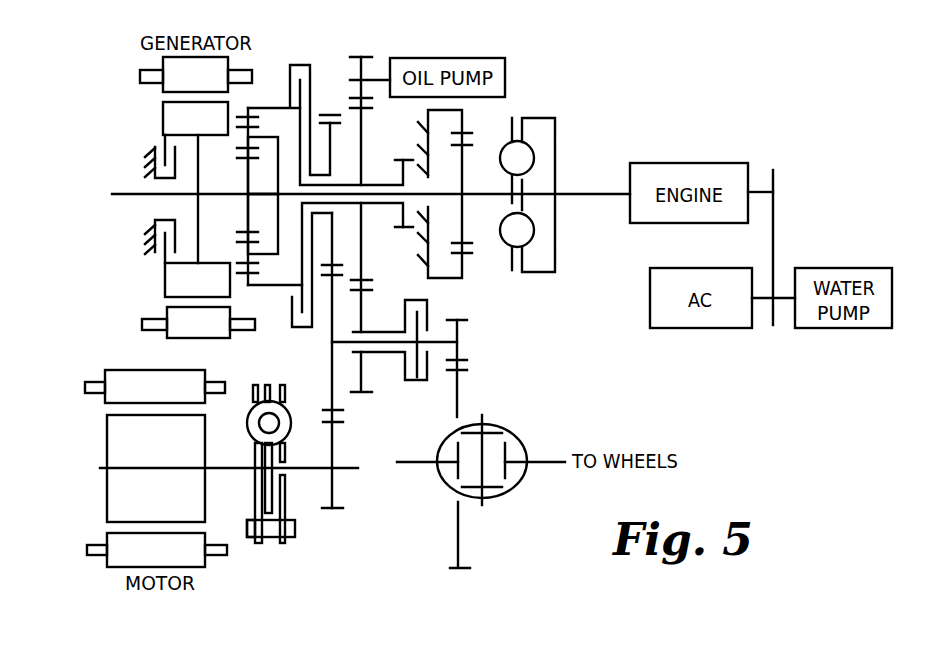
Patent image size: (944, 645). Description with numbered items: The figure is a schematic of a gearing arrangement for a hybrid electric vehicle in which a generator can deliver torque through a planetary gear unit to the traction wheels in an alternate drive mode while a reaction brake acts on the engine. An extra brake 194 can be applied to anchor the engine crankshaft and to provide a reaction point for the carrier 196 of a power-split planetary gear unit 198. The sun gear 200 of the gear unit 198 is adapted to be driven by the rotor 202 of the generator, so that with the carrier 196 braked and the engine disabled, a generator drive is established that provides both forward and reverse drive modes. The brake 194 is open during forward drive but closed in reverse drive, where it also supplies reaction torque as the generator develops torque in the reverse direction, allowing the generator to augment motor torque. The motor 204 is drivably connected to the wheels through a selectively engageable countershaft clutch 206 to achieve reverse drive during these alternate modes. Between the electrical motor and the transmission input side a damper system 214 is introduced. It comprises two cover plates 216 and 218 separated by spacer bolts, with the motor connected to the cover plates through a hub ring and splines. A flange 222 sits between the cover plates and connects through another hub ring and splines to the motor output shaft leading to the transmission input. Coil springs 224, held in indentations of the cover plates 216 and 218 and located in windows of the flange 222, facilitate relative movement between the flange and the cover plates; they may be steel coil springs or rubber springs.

The brake 194 is at (465, 120).
The carrier 196 is at (262, 136).
The power-split planetary gear unit 198 is at (262, 288).
The sun gear 200 is at (247, 181).
The rotor 202 is at (182, 282).
The motor 204 is at (112, 508).
The countershaft clutch 206 is at (430, 375).
The damper system 214 is at (270, 538).
The cover plate 216 is at (288, 510).
The cover plate 218 is at (267, 508).
The flange 222 is at (261, 523).
The coil springs 224 is at (246, 424).